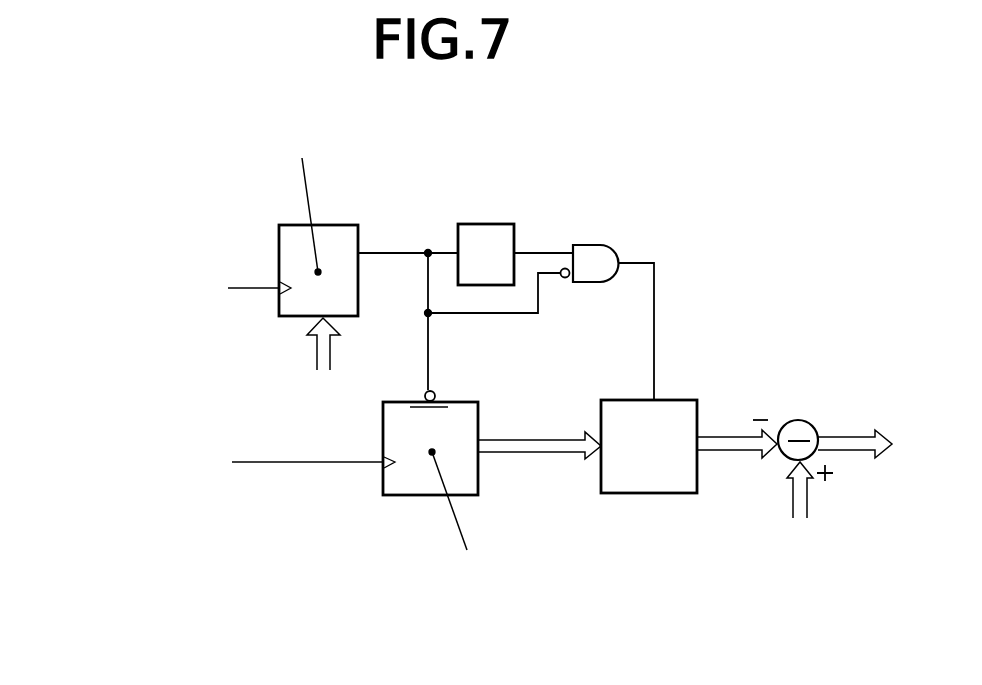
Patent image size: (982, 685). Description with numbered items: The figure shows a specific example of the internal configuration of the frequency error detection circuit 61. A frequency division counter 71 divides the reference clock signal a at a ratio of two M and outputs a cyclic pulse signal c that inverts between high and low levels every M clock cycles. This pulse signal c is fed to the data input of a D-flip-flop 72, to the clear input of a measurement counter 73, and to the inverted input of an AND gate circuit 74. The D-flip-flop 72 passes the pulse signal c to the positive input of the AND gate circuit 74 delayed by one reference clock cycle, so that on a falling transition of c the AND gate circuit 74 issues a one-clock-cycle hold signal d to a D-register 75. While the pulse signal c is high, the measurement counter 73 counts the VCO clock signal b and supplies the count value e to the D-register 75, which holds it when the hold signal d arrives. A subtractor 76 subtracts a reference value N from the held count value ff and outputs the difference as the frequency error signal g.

The frequency error detection circuit 61 is at (695, 197).
The frequency division counter 71 is at (343, 225).
The D-flip-flop 72 is at (488, 224).
The measurement counter 73 is at (408, 497).
The AND gate circuit 74 is at (603, 245).
The D-register 75 is at (643, 495).
The subtractor 76 is at (803, 420).